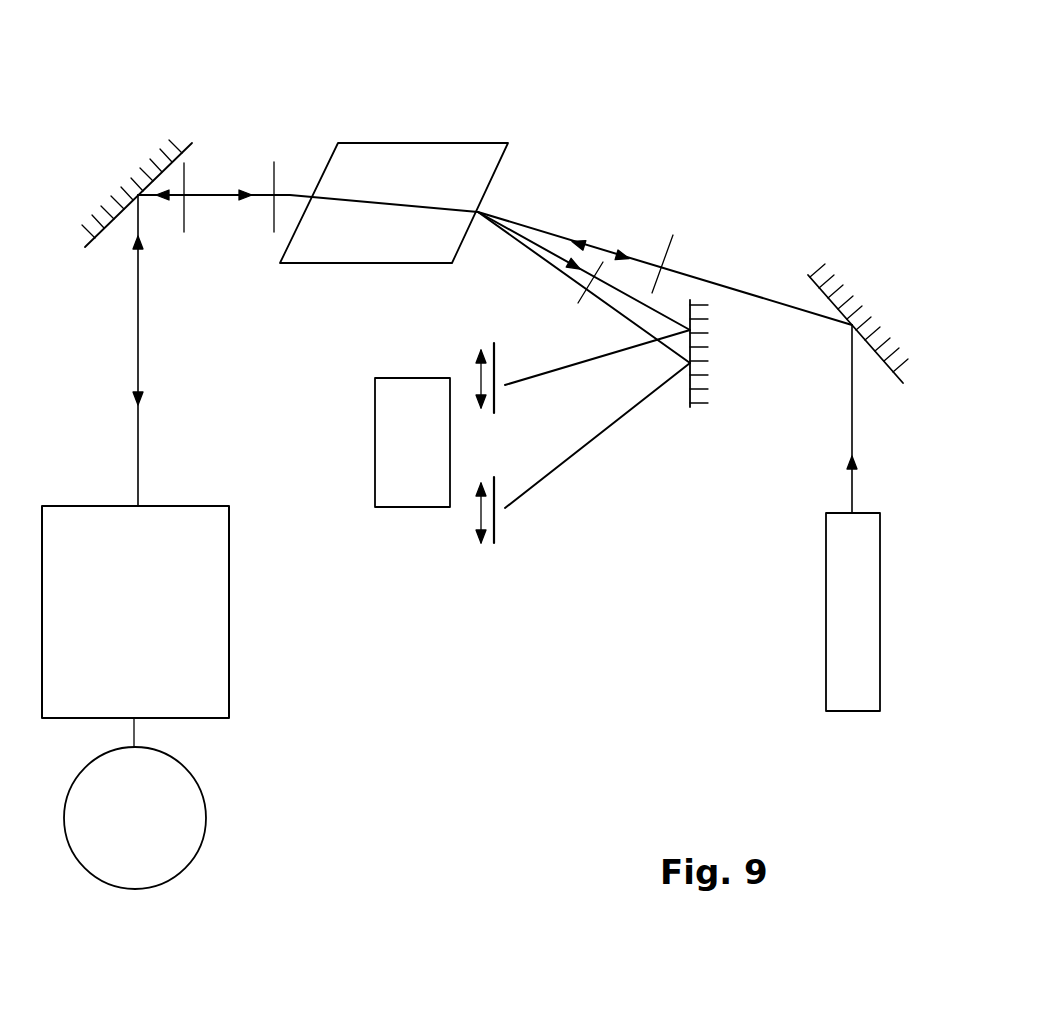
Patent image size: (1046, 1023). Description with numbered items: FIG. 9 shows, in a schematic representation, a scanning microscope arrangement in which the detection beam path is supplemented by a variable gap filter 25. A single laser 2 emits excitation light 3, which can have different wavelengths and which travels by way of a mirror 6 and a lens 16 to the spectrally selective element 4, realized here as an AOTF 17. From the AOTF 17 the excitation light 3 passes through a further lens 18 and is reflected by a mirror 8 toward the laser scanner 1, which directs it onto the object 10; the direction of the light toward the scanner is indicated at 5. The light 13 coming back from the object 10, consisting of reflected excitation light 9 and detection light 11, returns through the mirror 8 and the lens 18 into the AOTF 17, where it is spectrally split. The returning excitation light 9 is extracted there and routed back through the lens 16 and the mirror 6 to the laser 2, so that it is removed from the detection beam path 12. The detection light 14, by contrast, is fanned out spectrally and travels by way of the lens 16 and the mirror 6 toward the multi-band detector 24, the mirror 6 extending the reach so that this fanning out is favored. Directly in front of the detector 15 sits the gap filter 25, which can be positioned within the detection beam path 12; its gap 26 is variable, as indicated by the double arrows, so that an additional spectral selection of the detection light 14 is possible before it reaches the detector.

The laser scanner 1 is at (233, 653).
The laser 2 is at (826, 630).
The excitation light 3 is at (852, 475).
The spectrally selective element 4 is at (394, 161).
The AOTF 17 is at (410, 143).
The beam direction 5 is at (128, 308).
The mirror 6 is at (698, 389).
The mirror 8 is at (190, 153).
The reflected excitation light 9 is at (595, 247).
The detection light 11 is at (138, 340).
The object 10 is at (135, 803).
The detection beam path 12 is at (553, 262).
The light coming from object 13 is at (261, 196).
The detection light 14 is at (573, 437).
The detector 15 is at (393, 508).
The multi-band detector 24 is at (397, 502).
The lens 16 is at (673, 248).
The lens 18 is at (274, 173).
The variable gap filter 25 is at (492, 546).
The gap 26 is at (497, 432).